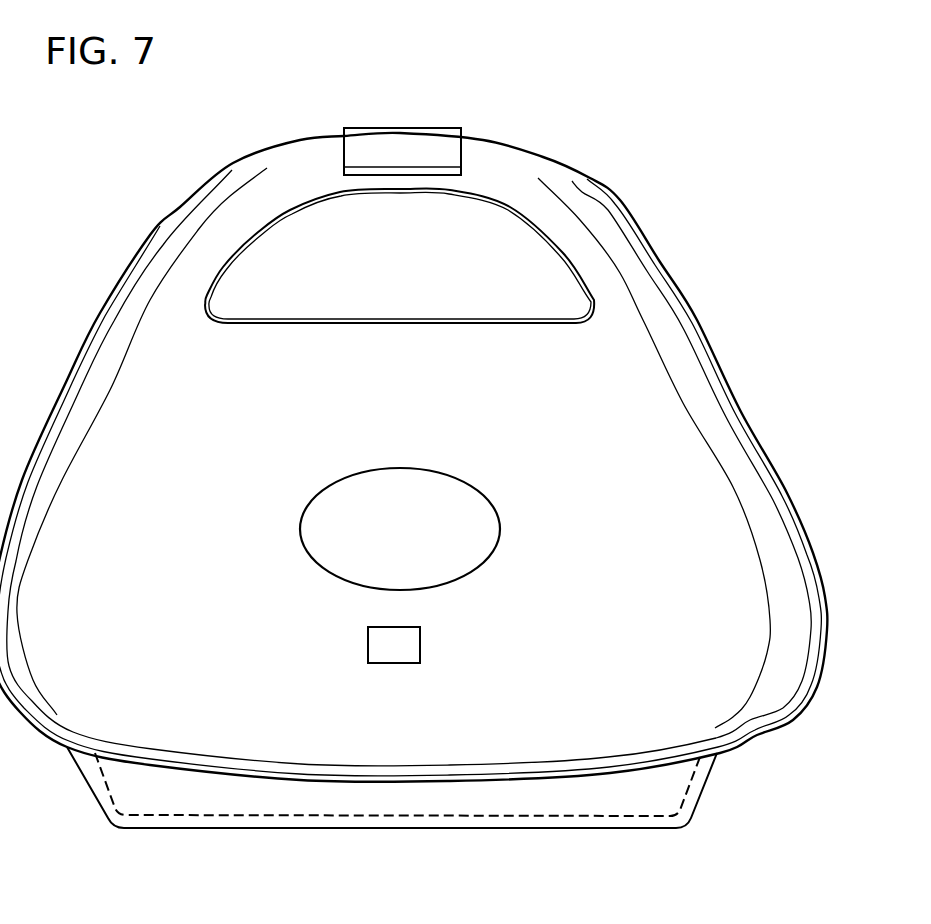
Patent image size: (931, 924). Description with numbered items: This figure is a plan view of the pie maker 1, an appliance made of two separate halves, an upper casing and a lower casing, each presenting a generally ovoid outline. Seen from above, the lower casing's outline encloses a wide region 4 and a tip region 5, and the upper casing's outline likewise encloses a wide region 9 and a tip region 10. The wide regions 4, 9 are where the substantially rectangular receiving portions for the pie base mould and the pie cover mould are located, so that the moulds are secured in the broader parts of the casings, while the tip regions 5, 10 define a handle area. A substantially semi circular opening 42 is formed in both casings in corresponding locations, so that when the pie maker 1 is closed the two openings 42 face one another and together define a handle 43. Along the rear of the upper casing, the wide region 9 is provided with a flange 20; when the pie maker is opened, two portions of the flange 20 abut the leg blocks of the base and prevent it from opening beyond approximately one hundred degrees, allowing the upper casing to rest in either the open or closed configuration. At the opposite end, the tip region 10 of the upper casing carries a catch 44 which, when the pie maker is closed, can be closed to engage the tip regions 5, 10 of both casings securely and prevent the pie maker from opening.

The pie maker 1 is at (752, 379).
The wide region 4 is at (767, 739).
The tip region 5 is at (611, 187).
The wide region 9 is at (733, 717).
The tip region 10 is at (600, 225).
The flange 20 is at (548, 793).
The semi circular opening 42 is at (277, 243).
The handle 43 is at (247, 182).
The catch 44 is at (428, 147).